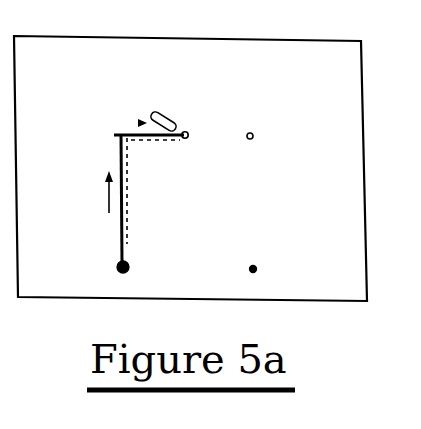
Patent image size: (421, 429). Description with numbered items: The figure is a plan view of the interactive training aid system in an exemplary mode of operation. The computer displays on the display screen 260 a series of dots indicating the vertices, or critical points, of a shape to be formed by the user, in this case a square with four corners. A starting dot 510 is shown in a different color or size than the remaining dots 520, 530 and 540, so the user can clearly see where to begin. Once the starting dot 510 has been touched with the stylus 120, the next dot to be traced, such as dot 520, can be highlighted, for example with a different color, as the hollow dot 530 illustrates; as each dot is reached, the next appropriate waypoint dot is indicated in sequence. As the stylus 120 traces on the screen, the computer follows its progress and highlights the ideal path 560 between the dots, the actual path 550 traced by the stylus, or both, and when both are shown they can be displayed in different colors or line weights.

The display screen 260 is at (233, 40).
The stylus 120 is at (165, 111).
The dot 520 is at (114, 135).
The starting dot 510 is at (118, 274).
The actual path 550 is at (129, 218).
The ideal path 560 is at (117, 227).
The dot 530 is at (253, 136).
The dot 540 is at (256, 269).